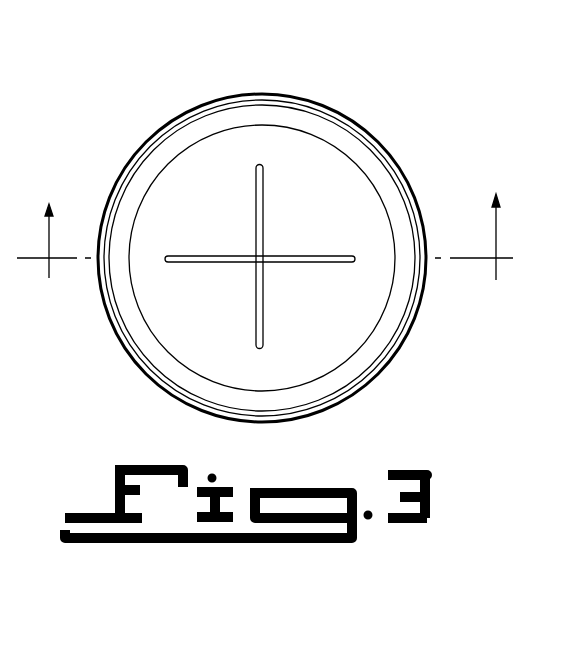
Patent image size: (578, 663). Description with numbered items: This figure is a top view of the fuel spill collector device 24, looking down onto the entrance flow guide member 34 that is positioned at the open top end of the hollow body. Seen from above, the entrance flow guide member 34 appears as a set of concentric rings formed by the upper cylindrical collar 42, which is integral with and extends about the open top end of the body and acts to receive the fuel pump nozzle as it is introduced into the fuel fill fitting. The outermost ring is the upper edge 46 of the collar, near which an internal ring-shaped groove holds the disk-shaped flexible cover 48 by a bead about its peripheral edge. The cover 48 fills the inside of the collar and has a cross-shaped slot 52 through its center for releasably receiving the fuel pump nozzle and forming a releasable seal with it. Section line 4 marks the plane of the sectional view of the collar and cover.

The fuel spill collector device 24 is at (259, 258).
The upper cylindrical collar 42 is at (158, 124).
The entrance flow guide member 34 is at (140, 378).
The upper edge 46 is at (104, 289).
The disk-shaped flexible cover 48 is at (345, 332).
The cross-shaped slot 52 is at (229, 252).
The section line 4- 4 is at (265, 211).